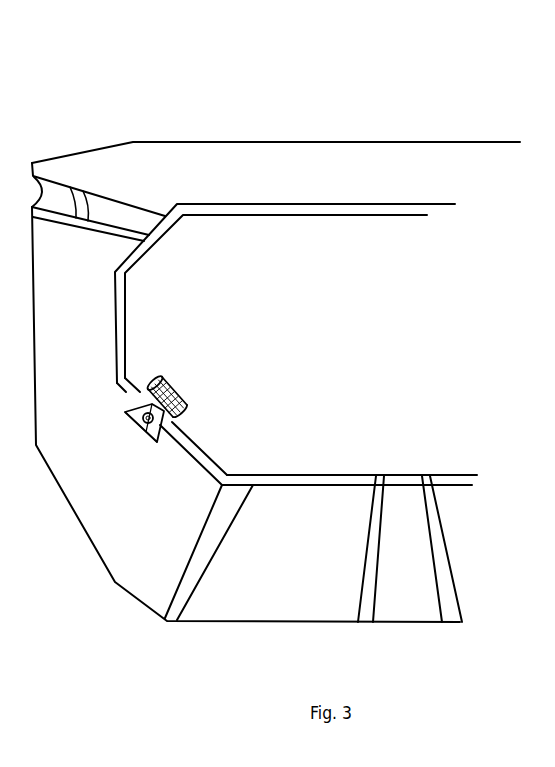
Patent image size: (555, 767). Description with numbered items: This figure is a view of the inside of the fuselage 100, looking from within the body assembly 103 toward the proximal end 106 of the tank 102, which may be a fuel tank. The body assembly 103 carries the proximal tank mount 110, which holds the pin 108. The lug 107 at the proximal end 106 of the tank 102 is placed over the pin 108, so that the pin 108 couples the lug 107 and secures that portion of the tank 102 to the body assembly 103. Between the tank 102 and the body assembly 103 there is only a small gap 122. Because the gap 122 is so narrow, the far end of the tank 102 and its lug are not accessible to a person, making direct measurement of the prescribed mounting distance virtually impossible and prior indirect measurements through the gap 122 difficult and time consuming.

The fuselage 100 is at (309, 46).
The tank 102 is at (296, 413).
The body assembly 103 is at (215, 141).
The proximal end 106 is at (367, 378).
The lug 107 is at (172, 389).
The pin 108 is at (150, 440).
The proximal tank mount 110 is at (132, 410).
The gap 122 is at (162, 478).